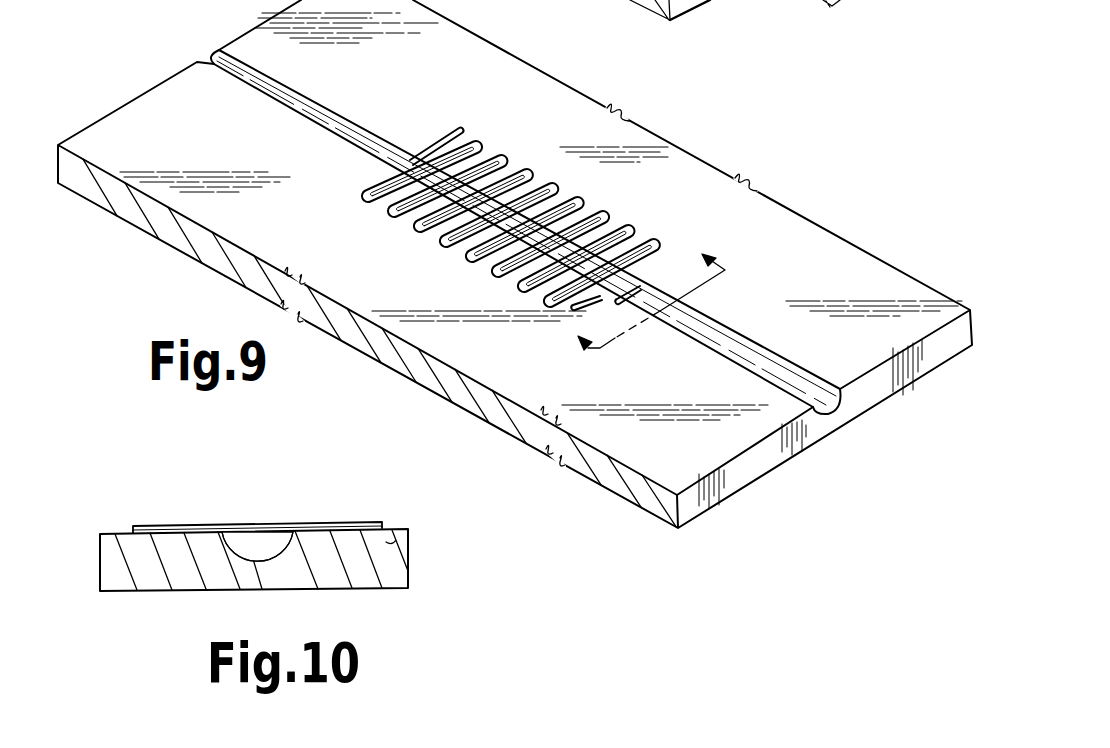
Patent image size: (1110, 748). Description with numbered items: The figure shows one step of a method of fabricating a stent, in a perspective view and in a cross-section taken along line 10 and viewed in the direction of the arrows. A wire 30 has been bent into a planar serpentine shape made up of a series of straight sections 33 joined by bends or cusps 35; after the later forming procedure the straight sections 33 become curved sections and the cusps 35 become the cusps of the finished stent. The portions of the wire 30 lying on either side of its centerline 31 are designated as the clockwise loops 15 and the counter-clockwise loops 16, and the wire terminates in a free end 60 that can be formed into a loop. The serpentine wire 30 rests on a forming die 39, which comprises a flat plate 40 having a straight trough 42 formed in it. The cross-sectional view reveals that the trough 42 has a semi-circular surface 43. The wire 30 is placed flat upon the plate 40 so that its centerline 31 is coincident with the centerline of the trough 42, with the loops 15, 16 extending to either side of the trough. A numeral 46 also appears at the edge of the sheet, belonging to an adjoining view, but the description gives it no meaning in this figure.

In FIG. 9, the section line 10- 10 is at (654, 300).
In FIG. 9, the clockwise loops 15 is at (474, 238).
In FIG. 9, the counter-clockwise loops 16 is at (537, 193).
In FIG. 9, the wire 30 is at (366, 183).
In FIG. 10, the wire 30 is at (169, 525).
In FIG. 9, the centerline 31 is at (624, 302).
In FIG. 9, the straight sections 33 is at (470, 152).
In FIG. 9, the cusps 35 is at (400, 233).
In FIG. 9, the forming die 39 is at (726, 165).
In FIG. 9, the flat plate 40 is at (704, 392).
In FIG. 10, the flat plate 40 is at (398, 537).
In FIG. 9, the trough 42 is at (792, 373).
In FIG. 10, the trough 42 is at (278, 540).
In FIG. 10, the semi-circular surface 43 is at (254, 562).
In FIG. 9, the adjacent figure element 46 is at (752, 14).
In FIG. 9, the free end 60 is at (455, 133).